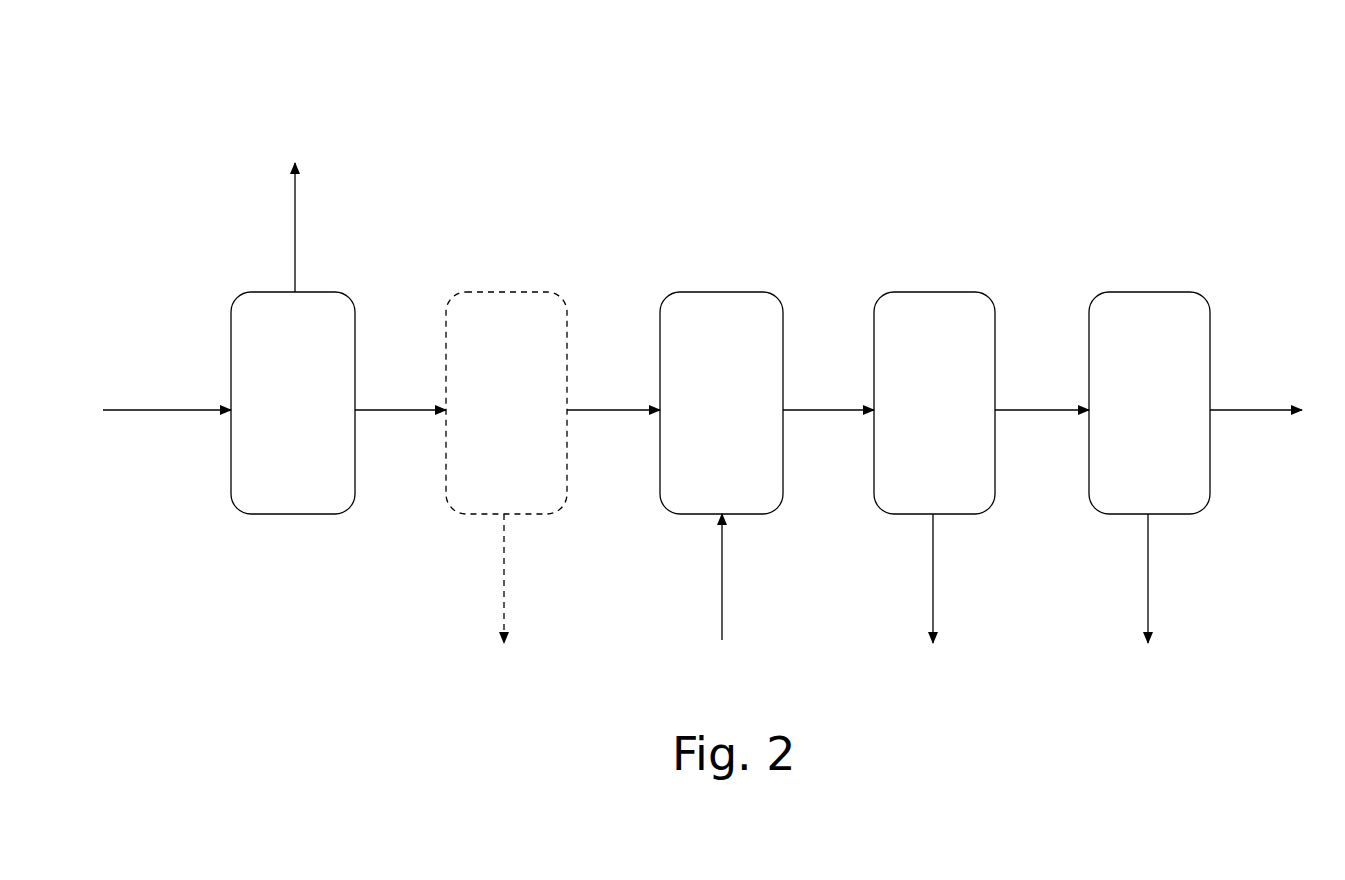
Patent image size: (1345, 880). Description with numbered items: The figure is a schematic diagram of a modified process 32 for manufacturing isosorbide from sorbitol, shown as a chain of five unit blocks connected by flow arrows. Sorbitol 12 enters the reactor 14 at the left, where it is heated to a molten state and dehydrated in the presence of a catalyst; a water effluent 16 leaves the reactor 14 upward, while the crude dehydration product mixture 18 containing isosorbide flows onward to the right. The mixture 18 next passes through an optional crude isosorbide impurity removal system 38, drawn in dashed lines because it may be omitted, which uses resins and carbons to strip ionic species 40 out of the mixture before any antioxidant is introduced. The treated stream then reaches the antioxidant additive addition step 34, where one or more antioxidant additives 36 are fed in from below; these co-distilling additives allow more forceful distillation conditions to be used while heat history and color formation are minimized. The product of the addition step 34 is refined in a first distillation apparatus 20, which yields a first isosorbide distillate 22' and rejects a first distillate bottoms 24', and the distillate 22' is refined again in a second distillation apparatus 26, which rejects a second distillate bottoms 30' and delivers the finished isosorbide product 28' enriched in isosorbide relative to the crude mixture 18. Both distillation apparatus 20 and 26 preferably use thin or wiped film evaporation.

The sorbitol 12 is at (178, 410).
The reactor 14 is at (282, 514).
The water effluent 16 is at (298, 265).
The dehydration product mixture 18 is at (382, 413).
The first distillation apparatus 20 is at (938, 292).
The first isosorbide distillate 22' is at (1042, 454).
The first distillate bottoms 24' is at (893, 578).
The second distillation apparatus 26 is at (1157, 292).
The finished isosorbide product 28' is at (1272, 360).
The second distillate bottoms 30' is at (1096, 578).
The modified process 32 is at (1053, 153).
The antioxidant additive addition step 34 is at (715, 292).
The antioxidant additives 36 is at (722, 570).
The crude isosorbide impurity removal system 38 is at (507, 283).
The ionic species 40 is at (502, 562).